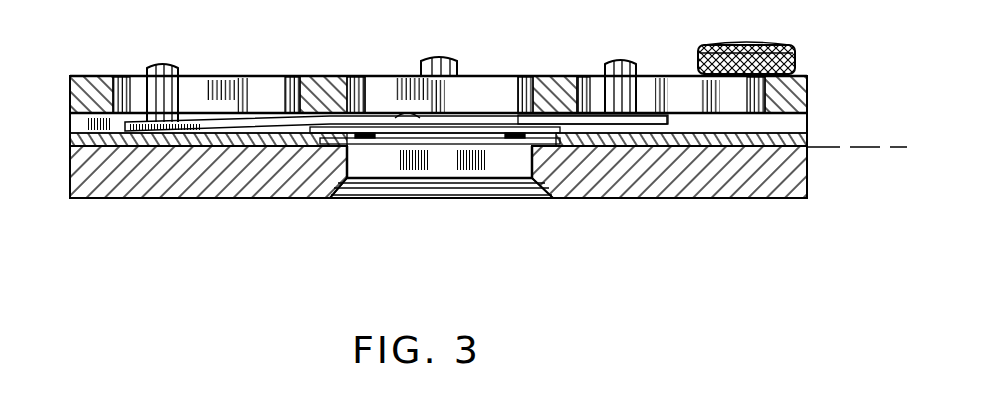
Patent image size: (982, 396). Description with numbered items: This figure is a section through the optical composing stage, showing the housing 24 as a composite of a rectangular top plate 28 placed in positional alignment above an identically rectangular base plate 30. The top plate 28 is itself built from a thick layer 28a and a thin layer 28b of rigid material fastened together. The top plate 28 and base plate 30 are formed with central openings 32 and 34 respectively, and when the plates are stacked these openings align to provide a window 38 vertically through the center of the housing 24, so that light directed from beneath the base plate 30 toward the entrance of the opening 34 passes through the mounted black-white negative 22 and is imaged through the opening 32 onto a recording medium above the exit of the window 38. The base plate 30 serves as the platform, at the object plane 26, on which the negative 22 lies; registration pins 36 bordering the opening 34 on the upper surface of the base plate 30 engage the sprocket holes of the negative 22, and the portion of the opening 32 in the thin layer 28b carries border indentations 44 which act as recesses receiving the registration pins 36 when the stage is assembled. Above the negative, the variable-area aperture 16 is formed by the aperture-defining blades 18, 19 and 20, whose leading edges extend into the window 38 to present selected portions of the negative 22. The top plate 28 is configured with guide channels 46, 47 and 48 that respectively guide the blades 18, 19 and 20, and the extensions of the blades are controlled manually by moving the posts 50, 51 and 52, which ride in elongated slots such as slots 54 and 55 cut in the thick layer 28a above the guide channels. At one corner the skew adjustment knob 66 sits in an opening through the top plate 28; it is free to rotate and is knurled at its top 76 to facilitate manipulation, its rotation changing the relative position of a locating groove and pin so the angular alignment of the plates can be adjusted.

The variable-area aperture 16 is at (394, 88).
The aperture-defining blade 18 is at (222, 116).
The aperture-defining blade 19 is at (476, 130).
The aperture-defining blade 20 is at (540, 130).
The black-white negative 22 is at (523, 182).
The housing 24 is at (122, 52).
The object plane 26 is at (870, 147).
The top plate 28 is at (808, 104).
The thick layer 28a is at (70, 86).
The thin layer 28b is at (70, 143).
The base plate 30 is at (808, 183).
The central opening 32 is at (356, 80).
The central opening 34 is at (346, 188).
The registration pins 36 is at (375, 136).
The window 38 is at (453, 212).
The border indentations 44 is at (398, 134).
The guide channel 46 is at (90, 126).
The guide channel 47 is at (715, 135).
The guide channel 48 is at (410, 118).
The post 50 is at (165, 63).
The post 51 is at (630, 62).
The post 52 is at (446, 58).
The elongated slot 54 is at (291, 78).
The elongated slot 55 is at (765, 98).
The skew adjustment knob 66 is at (788, 46).
The knurled top 76 is at (797, 59).